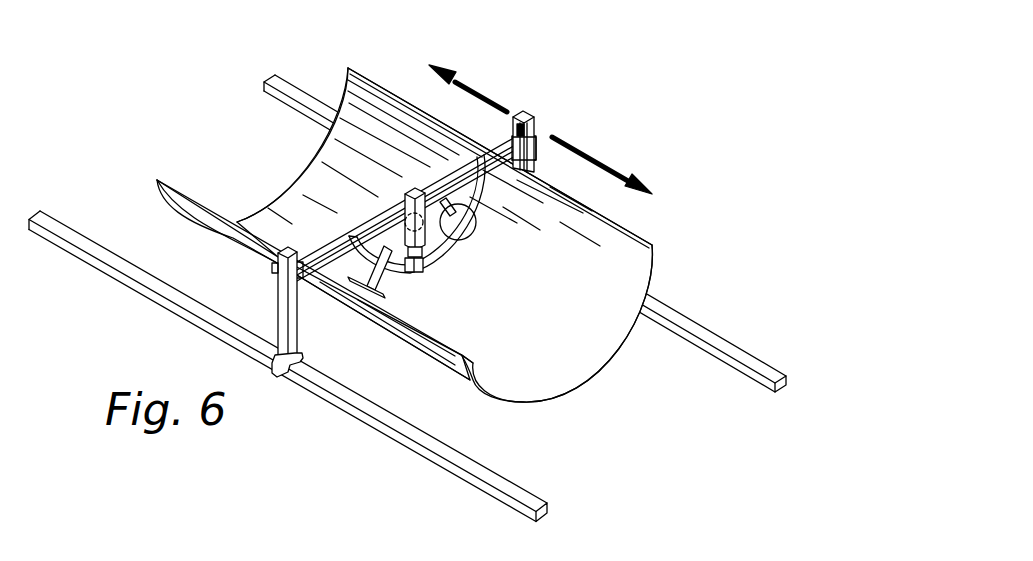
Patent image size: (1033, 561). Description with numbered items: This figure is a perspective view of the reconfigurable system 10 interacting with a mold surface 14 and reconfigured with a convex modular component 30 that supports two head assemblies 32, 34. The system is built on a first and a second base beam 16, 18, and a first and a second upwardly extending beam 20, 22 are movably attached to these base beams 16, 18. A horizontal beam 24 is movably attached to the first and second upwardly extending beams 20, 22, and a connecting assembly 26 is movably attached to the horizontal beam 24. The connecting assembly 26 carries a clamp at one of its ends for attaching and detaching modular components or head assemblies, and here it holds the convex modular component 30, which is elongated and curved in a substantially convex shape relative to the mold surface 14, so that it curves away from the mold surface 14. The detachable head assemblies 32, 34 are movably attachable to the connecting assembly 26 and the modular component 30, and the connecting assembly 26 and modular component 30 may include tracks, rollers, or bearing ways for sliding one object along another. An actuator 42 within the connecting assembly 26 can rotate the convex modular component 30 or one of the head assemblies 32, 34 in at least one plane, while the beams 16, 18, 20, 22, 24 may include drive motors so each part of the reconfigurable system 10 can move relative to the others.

The reconfigurable system 10 is at (643, 84).
The mold surface 14 is at (560, 349).
The first base beam 16 is at (385, 434).
The second base beam 18 is at (712, 337).
The first upwardly extending beam 20 is at (280, 315).
The second upwardly extending beam 22 is at (534, 164).
The horizontal beam 24 is at (508, 150).
The connecting assembly 26 is at (405, 195).
The convex modular component 30 is at (437, 252).
The head assembly 32 is at (386, 294).
The head assembly 34 is at (476, 228).
The actuator 42 is at (425, 235).